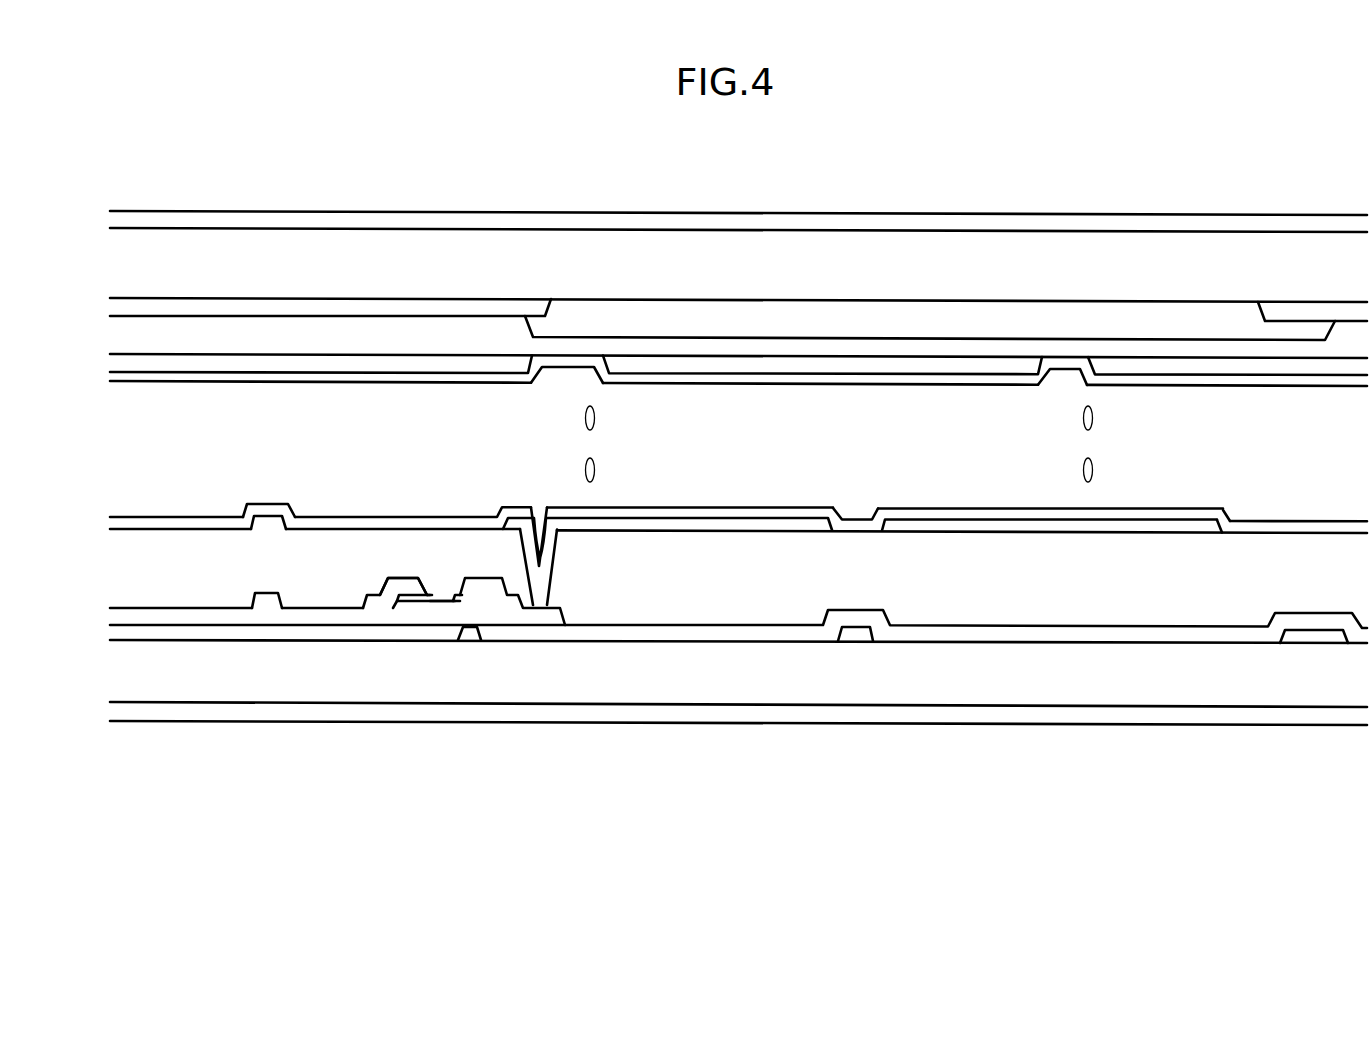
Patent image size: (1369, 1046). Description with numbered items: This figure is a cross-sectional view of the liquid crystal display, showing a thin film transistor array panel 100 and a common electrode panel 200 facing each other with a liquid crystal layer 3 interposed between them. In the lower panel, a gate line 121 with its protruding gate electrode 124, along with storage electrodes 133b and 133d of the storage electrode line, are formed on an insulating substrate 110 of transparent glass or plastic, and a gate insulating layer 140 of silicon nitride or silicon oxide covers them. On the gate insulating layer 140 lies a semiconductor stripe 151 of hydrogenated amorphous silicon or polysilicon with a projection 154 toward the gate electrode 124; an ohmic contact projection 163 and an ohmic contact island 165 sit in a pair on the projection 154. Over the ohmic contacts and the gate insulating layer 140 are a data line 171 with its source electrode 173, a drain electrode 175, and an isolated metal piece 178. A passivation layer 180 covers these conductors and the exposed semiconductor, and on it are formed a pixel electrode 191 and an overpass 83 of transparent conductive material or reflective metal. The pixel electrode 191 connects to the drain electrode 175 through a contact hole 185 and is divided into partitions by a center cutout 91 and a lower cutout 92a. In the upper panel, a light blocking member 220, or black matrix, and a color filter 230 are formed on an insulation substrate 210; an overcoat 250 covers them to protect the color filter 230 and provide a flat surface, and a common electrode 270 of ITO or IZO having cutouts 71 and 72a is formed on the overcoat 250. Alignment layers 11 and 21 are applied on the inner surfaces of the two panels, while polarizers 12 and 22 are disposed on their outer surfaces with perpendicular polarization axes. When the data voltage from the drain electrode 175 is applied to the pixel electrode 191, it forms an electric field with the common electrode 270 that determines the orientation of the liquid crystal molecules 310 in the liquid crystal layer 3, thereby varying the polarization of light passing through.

The liquid crystal layer 3 is at (97, 388).
The alignment layer 11 is at (158, 520).
The polarizer 12 is at (128, 712).
The alignment layer 21 is at (153, 378).
The polarizer 22 is at (128, 218).
The cutout 71 is at (1047, 373).
The cutout 72a is at (536, 368).
The overpass 83 is at (265, 522).
The center cutout 91 is at (1230, 522).
The lower cutout 92a is at (845, 517).
The thin film transistor array panel 100 is at (97, 515).
The insulating substrate 110 is at (1007, 677).
The gate line 121 is at (177, 633).
The gate electrode 124 is at (457, 637).
The second storage electrode 133b is at (1312, 637).
The fourth storage electrode 133d is at (855, 635).
The gate insulating layer 140 is at (925, 635).
The semiconductor stripe 151 is at (398, 604).
The projection 154 is at (453, 601).
The projection of ohmic contact stripe 163 is at (413, 600).
The ohmic contact island 165 is at (473, 601).
The data line 171 is at (370, 598).
The source electrode 173 is at (407, 587).
The drain electrode 175 is at (543, 617).
The isolated metal piece 178 is at (271, 612).
The passivation layer 180 is at (757, 587).
The contact hole 185 is at (540, 515).
The pixel electrode 191 is at (677, 523).
The common electrode panel 200 is at (97, 228).
The insulation substrate 210 is at (670, 247).
The light blocking member 220 is at (418, 310).
The color filter 230 is at (895, 315).
The overcoat 250 is at (783, 345).
The common electrode 270 is at (988, 367).
The liquid crystal molecule 310 is at (596, 418).